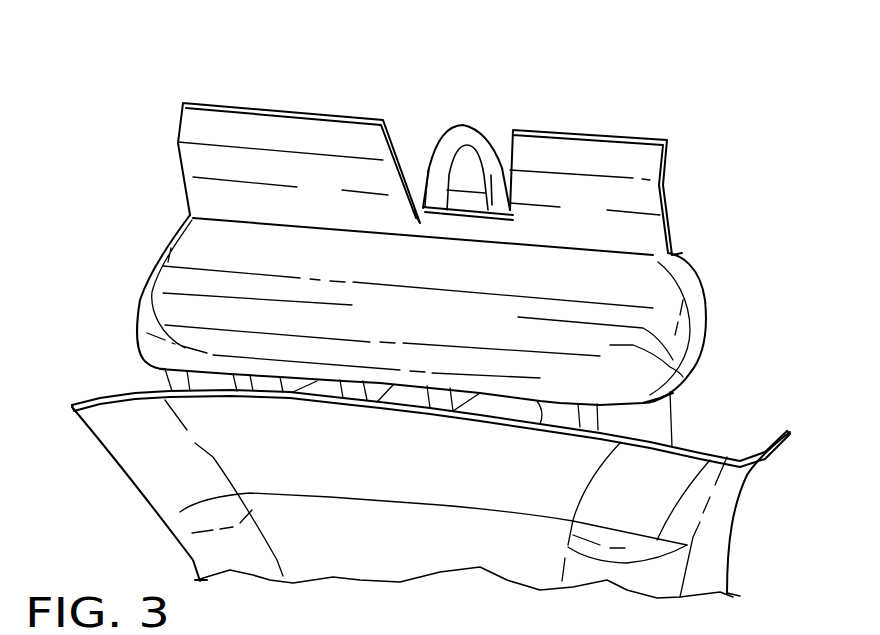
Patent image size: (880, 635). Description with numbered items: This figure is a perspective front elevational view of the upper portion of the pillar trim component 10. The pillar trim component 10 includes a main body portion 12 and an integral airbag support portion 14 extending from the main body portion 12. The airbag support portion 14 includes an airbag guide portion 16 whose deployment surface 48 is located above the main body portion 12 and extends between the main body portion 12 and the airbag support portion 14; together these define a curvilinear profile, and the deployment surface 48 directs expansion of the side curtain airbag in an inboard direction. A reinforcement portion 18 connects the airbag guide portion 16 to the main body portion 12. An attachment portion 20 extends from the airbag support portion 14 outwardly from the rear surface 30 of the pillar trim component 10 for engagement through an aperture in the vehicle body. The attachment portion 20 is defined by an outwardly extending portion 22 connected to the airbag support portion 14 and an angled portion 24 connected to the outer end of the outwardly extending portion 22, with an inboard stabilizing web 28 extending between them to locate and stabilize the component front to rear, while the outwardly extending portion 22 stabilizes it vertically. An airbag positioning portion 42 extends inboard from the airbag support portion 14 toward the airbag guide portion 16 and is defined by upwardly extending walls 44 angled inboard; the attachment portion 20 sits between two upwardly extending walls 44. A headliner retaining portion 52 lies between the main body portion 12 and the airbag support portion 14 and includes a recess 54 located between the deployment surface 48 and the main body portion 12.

The pillar trim component 10 is at (122, 485).
The main body portion 12 is at (288, 528).
The airbag support portion 14 is at (211, 243).
The airbag guide portion 16 is at (214, 307).
The reinforcement portion 18 is at (698, 324).
The attachment portion 20 is at (477, 114).
The outwardly extending portion 22 is at (432, 207).
The angled portion 24 is at (462, 163).
The inboard stabilizing web 28 is at (462, 165).
The rear surface 30 is at (728, 554).
The airbag positioning portion 42 is at (266, 85).
The upwardly extending wall 44 is at (585, 193).
The deployment surface 48 is at (683, 377).
The headliner retaining portion 52 is at (116, 353).
The recess 54 is at (107, 391).